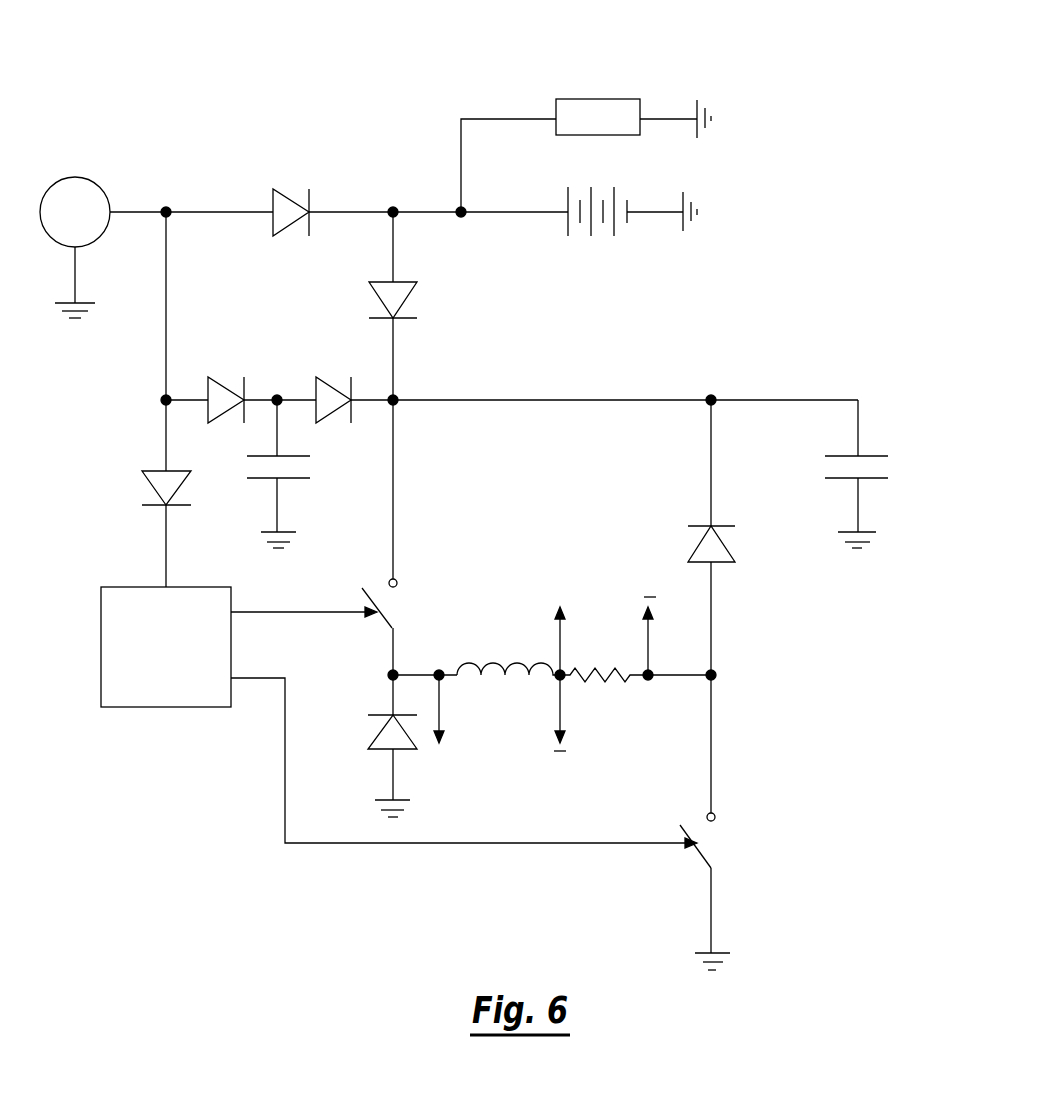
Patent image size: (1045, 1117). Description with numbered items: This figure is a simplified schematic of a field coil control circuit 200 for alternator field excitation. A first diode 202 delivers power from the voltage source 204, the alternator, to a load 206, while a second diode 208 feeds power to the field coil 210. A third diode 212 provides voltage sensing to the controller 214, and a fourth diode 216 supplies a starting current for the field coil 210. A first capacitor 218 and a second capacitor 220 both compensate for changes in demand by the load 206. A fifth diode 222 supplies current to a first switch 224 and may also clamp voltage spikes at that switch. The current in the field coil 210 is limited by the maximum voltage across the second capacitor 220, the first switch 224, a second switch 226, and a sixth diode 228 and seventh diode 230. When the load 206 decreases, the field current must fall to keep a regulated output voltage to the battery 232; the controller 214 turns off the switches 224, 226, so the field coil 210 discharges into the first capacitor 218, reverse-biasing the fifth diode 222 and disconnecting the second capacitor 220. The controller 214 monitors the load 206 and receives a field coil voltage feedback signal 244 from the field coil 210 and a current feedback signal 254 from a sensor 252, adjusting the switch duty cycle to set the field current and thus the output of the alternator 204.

The field coil control circuit 200 is at (194, 80).
The first diode 202 is at (311, 196).
The voltage source 204 is at (95, 180).
The load 206 is at (600, 99).
The second diode 208 is at (248, 377).
The field coil 210 is at (460, 674).
The third diode 212 is at (156, 506).
The controller 214 is at (101, 650).
The fourth diode 216 is at (417, 319).
The first capacitor 218 is at (874, 455).
The second capacitor 220 is at (300, 479).
The fifth diode 222 is at (353, 377).
The first switch 224 is at (362, 592).
The second switch 226 is at (708, 854).
The sixth diode 228 is at (382, 715).
The seventh diode 230 is at (700, 526).
The battery 232 is at (566, 236).
The field coil voltage feedback signal 244 is at (487, 794).
The sensor 252 is at (604, 678).
The current feedback signal 254 is at (596, 572).